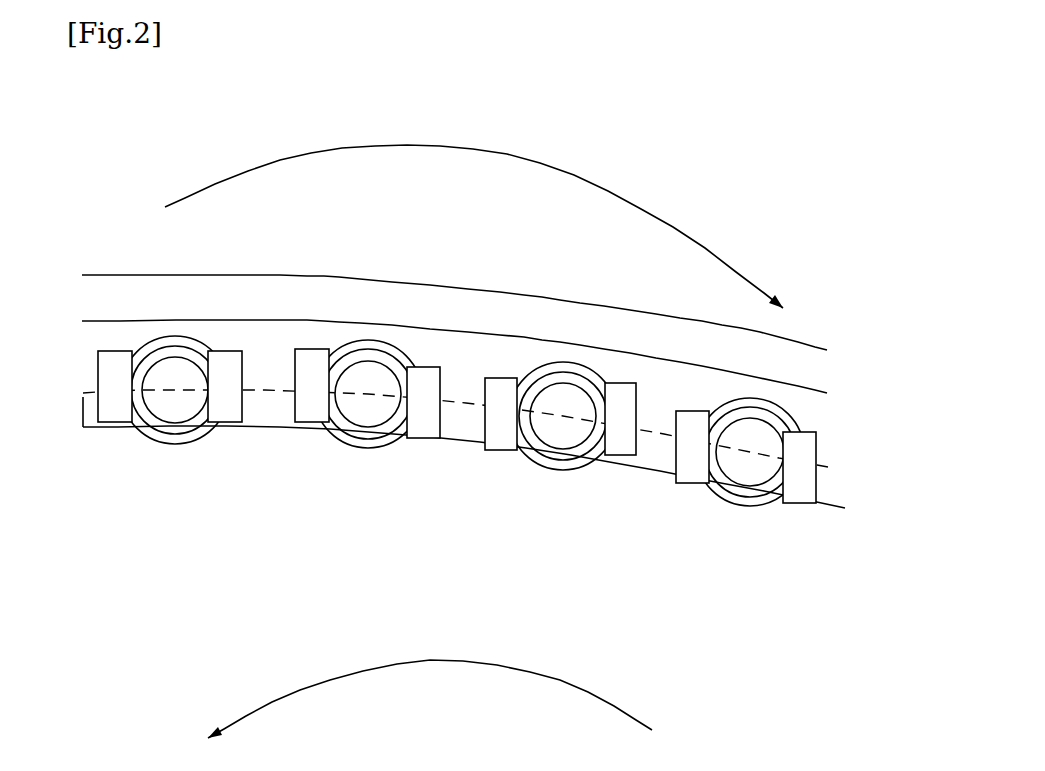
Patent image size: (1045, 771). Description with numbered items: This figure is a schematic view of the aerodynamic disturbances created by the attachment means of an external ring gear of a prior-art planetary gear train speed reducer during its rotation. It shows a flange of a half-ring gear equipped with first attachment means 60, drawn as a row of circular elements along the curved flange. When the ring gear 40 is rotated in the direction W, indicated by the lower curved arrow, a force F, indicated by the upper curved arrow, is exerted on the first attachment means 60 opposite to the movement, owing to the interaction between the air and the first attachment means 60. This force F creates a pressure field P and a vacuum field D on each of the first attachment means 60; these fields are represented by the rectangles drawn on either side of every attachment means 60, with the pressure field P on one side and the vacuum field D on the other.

The ring gear 40 is at (823, 372).
The first attachment means 60 is at (172, 403).
The pressure field P is at (108, 413).
The vacuum field D is at (228, 410).
The force F is at (474, 214).
The direction of rotation W is at (430, 699).